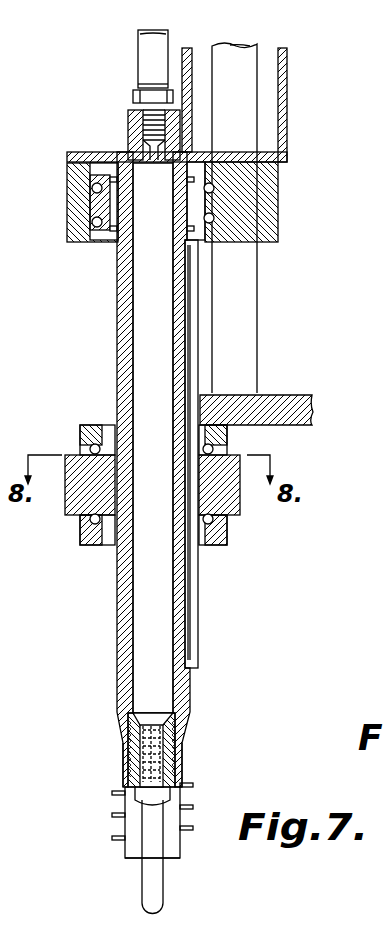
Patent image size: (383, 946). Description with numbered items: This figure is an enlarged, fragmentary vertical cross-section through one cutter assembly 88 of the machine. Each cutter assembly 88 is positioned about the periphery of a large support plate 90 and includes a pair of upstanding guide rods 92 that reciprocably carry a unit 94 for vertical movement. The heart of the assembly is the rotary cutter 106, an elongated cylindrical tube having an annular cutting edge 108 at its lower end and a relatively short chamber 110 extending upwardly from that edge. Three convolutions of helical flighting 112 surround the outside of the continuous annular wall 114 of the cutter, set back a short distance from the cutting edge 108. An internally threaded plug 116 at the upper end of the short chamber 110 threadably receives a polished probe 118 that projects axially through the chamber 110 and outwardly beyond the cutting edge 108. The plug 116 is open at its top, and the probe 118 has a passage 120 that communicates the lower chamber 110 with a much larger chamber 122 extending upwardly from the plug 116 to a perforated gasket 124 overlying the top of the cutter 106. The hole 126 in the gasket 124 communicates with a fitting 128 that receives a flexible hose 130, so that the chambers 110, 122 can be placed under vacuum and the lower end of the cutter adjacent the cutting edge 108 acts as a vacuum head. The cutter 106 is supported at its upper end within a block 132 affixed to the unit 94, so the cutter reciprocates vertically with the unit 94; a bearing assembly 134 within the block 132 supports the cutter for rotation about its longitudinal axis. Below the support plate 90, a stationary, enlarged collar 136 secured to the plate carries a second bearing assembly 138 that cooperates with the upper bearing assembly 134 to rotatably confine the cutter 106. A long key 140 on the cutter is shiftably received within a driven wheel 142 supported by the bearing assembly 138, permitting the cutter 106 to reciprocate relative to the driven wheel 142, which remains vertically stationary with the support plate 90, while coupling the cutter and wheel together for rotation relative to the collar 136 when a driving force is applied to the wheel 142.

The cutter assembly 88 is at (292, 166).
The support plate 90 is at (290, 403).
The guide rod 92 is at (242, 43).
The unit 94 is at (283, 72).
The rotary cutter 106 is at (113, 337).
The annular cutting edge 108 is at (175, 860).
The short chamber 110 is at (137, 848).
The helical flighting 112 is at (122, 813).
The annular wall 114 is at (180, 762).
The internally threaded plug 116 is at (128, 727).
The polished probe 118 is at (155, 902).
The passage 120 is at (127, 762).
The chamber 122 is at (143, 617).
The perforated gasket 124 is at (137, 165).
The hole 126 is at (153, 160).
The fitting 128 is at (143, 115).
The flexible hose 130 is at (143, 32).
The block 132 is at (270, 218).
The bearing assembly 134 is at (82, 202).
The collar 136 is at (97, 538).
The second bearing assembly 138 is at (75, 443).
The key 140 is at (192, 613).
The driven wheel 142 is at (240, 500).